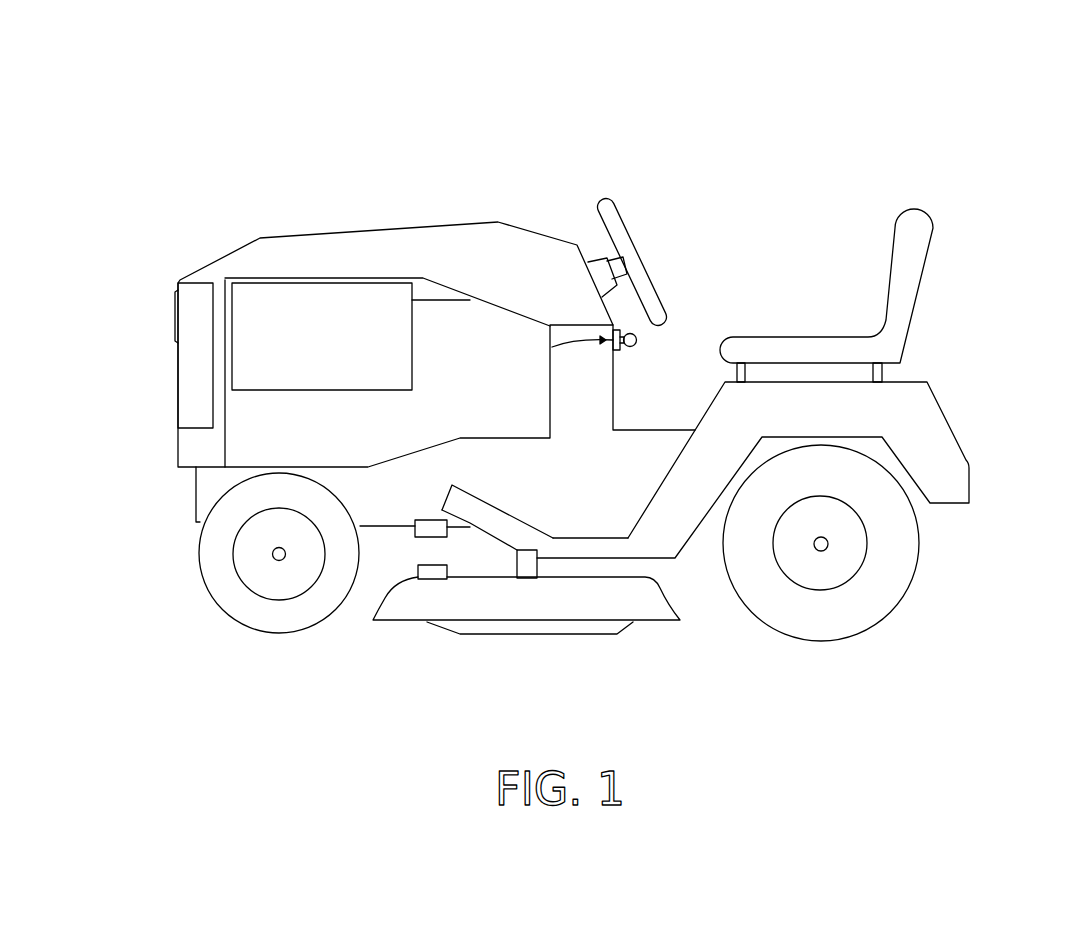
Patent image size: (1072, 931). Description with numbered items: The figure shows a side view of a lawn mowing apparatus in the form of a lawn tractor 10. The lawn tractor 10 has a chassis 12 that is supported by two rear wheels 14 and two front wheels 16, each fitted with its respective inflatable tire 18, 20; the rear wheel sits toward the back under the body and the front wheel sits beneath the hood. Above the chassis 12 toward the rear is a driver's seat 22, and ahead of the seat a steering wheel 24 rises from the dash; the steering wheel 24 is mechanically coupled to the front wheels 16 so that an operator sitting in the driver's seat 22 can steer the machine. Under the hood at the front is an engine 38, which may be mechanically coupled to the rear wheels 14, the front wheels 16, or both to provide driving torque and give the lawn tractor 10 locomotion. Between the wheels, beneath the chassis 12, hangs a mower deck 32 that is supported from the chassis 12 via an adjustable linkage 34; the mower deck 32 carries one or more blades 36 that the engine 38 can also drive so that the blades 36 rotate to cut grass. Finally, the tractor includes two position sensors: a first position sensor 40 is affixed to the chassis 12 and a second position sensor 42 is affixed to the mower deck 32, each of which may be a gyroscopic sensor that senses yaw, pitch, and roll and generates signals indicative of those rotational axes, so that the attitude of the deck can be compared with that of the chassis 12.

The lawn tractor 10 is at (537, 367).
The chassis 12 is at (390, 508).
The rear wheels 14 is at (850, 535).
The front wheels 16 is at (250, 542).
The inflatable tire 18 is at (846, 545).
The inflatable tire 20 is at (247, 566).
The driver's seat 22 is at (905, 267).
The steering wheel 24 is at (615, 220).
The mower deck 32 is at (526, 624).
The adjustable linkage 34 is at (530, 565).
The blades 36 is at (462, 632).
The engine 38 is at (325, 347).
The first position sensor 40 is at (430, 525).
The second position sensor 42 is at (423, 578).